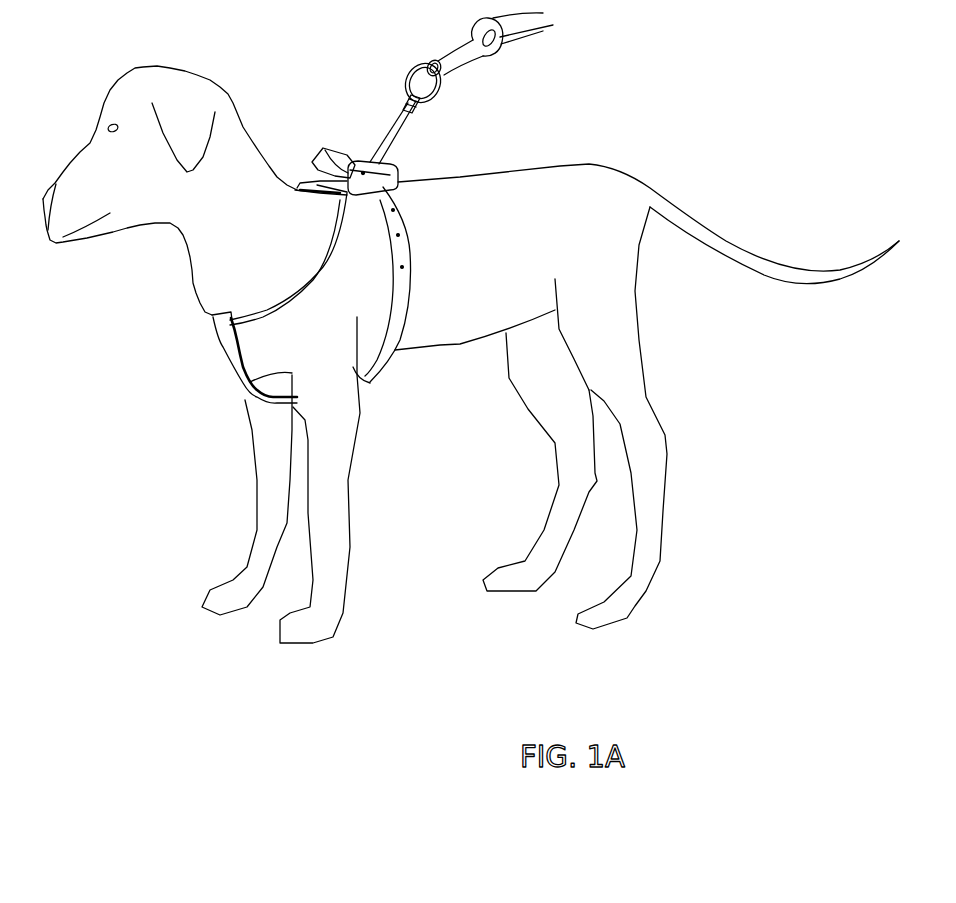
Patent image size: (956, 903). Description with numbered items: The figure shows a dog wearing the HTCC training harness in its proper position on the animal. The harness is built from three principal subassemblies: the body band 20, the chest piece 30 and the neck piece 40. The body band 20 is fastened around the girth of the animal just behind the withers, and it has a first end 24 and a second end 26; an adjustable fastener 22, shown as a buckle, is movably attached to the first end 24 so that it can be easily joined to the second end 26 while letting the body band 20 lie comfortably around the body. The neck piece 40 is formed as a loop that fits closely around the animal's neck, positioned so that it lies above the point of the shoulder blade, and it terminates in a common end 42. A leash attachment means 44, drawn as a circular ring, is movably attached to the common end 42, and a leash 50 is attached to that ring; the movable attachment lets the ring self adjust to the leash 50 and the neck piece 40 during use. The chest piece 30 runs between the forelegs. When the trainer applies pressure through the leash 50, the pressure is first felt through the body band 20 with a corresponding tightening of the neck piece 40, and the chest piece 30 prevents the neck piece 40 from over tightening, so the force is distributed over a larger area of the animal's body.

The body band 20 is at (407, 250).
The adjustable fastener 22 is at (392, 170).
The first end 24 is at (318, 182).
The second end 26 is at (332, 158).
The chest piece 30 is at (237, 357).
The neck piece 40 is at (307, 287).
The common end 42 is at (417, 110).
The leash attachment means 44 is at (437, 92).
The leash 50 is at (528, 37).